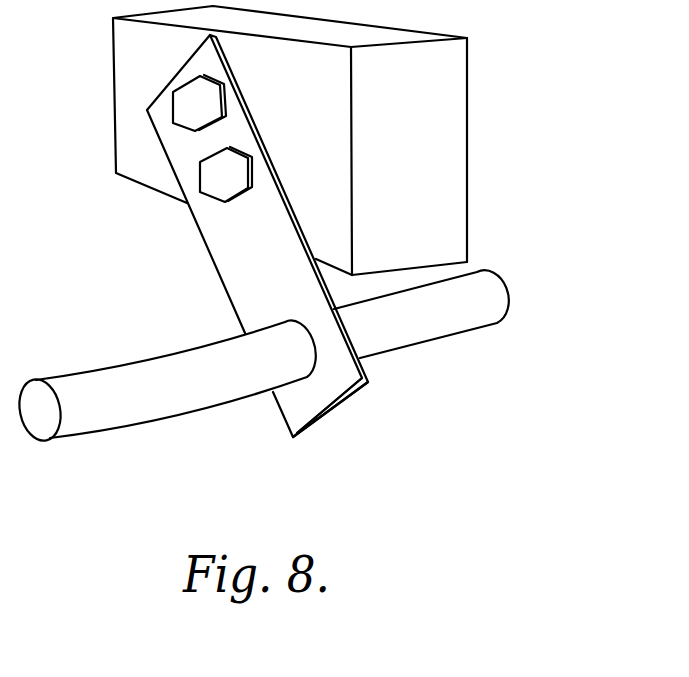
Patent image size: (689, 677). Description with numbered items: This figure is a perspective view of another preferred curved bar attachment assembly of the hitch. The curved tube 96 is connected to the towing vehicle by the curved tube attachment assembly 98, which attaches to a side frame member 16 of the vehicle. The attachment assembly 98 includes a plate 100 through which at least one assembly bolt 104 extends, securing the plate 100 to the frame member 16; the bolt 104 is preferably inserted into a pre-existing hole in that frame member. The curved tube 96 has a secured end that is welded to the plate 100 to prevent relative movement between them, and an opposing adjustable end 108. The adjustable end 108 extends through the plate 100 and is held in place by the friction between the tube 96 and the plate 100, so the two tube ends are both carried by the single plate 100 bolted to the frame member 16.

The side frame member 16 is at (457, 63).
The curved tube 96 is at (170, 403).
The curved tube attachment assembly 98 is at (350, 420).
The plate 100 is at (230, 257).
The assembly bolt 104 is at (187, 102).
The adjustable end 108 is at (512, 282).